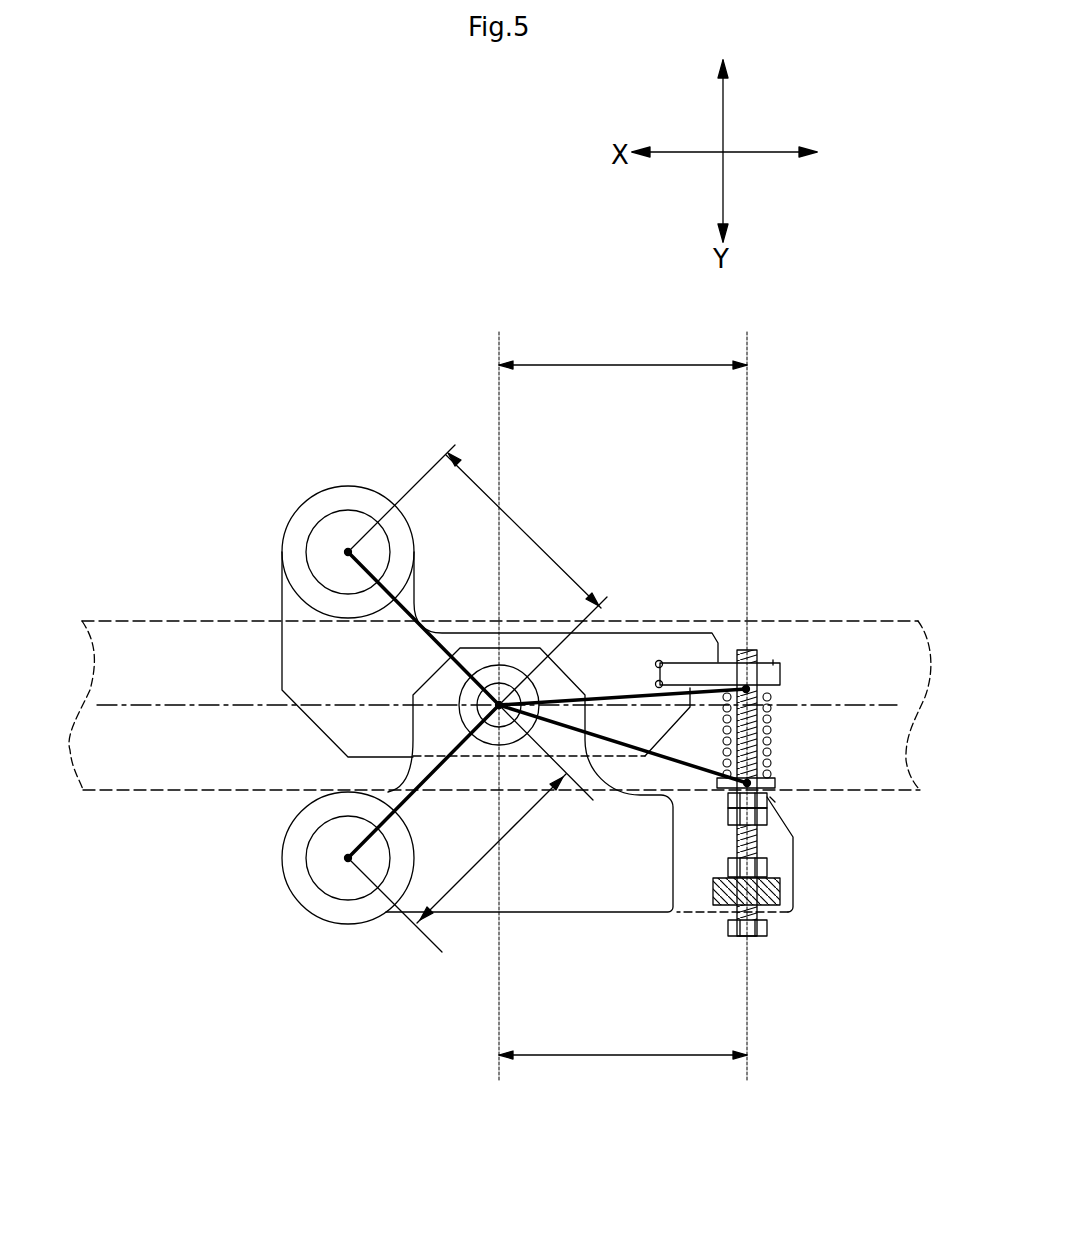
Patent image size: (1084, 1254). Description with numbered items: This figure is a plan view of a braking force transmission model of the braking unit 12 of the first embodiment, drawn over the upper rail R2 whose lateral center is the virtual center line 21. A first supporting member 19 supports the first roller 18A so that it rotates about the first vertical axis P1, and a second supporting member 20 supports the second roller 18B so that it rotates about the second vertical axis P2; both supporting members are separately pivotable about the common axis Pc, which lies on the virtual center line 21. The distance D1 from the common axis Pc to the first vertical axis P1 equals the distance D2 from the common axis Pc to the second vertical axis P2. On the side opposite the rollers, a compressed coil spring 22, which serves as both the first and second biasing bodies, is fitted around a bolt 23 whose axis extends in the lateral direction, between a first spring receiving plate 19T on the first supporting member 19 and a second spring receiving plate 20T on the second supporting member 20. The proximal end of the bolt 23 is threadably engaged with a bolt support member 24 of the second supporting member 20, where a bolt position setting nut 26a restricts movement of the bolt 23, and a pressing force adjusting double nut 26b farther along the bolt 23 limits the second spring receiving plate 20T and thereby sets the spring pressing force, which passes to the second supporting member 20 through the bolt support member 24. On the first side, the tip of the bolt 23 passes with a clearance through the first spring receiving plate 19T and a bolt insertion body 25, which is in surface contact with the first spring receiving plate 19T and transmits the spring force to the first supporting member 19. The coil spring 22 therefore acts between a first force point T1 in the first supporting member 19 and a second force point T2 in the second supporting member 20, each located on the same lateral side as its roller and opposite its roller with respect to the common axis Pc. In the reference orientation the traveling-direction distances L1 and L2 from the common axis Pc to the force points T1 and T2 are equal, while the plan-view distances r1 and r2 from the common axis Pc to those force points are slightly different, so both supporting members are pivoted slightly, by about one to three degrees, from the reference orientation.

The braking unit 12 is at (258, 947).
The first roller 18A is at (310, 498).
The second roller 18B is at (283, 842).
The first supporting member 19 is at (637, 632).
The second supporting member 20 is at (573, 913).
The virtual center line 21 is at (148, 707).
The upper rail R2 is at (148, 622).
The coil spring 22 is at (773, 742).
The bolt 23 is at (767, 930).
The bolt support member 24 is at (778, 893).
The bolt insertion body 25 is at (780, 675).
The bolt position setting nut 26a is at (768, 870).
The pressing force adjusting double nut 26b is at (728, 800).
The first spring receiving plate 19T is at (757, 688).
The second spring receiving plate 20T is at (776, 783).
The first force point T1 is at (773, 663).
The second force point T2 is at (773, 800).
The first vertical axis P1 is at (348, 552).
The second vertical axis P2 is at (348, 858).
The common axis Pc is at (490, 726).
The distance from common axis to first vertical axis D1 is at (477, 575).
The distance from common axis to second vertical axis D2 is at (470, 828).
The distance from common axis to first force point r1 is at (625, 693).
The distance from common axis to second force point r2 is at (627, 745).
The distance in traveling direction from common axis to first force point L1 is at (623, 351).
The distance in traveling direction from common axis to second force point L2 is at (623, 1079).